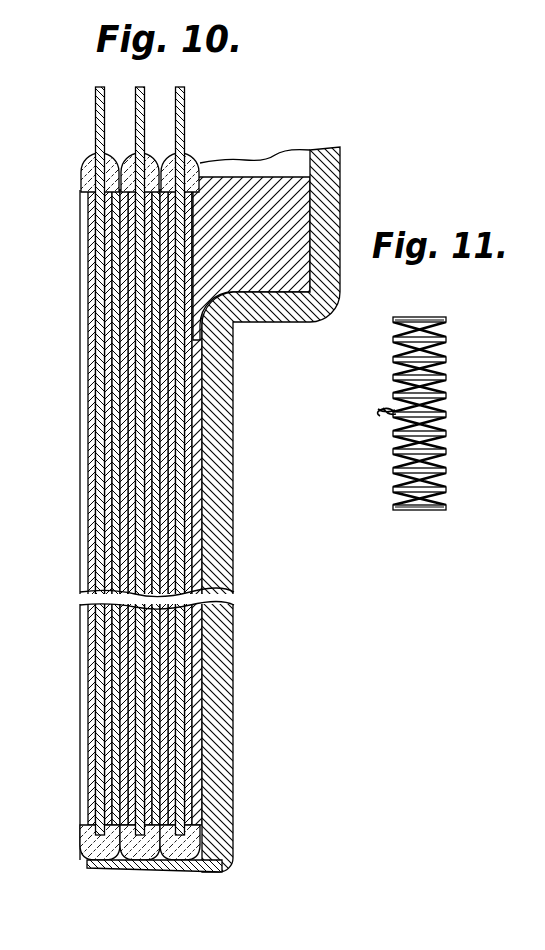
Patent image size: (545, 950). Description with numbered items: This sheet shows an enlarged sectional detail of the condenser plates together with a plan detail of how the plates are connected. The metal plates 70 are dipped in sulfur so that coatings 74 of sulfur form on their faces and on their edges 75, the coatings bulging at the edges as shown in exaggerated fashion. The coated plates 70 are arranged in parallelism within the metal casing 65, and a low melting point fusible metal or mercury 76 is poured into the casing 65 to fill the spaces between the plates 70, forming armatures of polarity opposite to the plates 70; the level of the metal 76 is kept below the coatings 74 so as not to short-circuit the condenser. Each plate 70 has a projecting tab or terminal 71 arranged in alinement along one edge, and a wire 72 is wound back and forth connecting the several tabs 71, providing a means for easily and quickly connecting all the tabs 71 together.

In FIG. 10, the metal casing 65 is at (220, 487).
In FIG. 10, the metal plates 70 is at (100, 365).
In FIG. 10, the projecting tabs 71 is at (172, 95).
In FIG. 11, the projecting tabs 71 is at (445, 468).
In FIG. 11, the wire 72 is at (437, 348).
In FIG. 10, the sulfur coatings 74 is at (192, 430).
In FIG. 10, the plate edges 75 is at (200, 163).
In FIG. 10, the fusible metal 76 is at (297, 213).